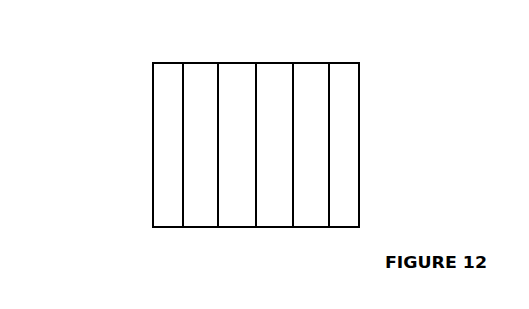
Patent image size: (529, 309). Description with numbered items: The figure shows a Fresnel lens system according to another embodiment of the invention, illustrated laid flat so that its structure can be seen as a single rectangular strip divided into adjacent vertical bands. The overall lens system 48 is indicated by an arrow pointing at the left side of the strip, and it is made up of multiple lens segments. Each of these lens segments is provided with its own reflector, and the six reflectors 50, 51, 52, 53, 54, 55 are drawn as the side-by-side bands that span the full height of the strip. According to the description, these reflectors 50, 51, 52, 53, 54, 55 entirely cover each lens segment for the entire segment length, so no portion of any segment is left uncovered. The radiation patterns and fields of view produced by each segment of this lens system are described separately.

The multilayer stack 48 is at (126, 120).
The reflector 50 is at (169, 218).
The reflector 51 is at (206, 78).
The reflector 52 is at (242, 215).
The reflector 53 is at (280, 76).
The reflector 54 is at (317, 211).
The reflector 55 is at (348, 76).